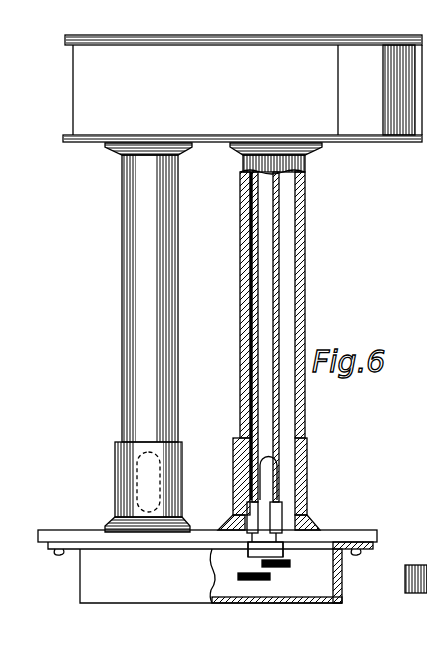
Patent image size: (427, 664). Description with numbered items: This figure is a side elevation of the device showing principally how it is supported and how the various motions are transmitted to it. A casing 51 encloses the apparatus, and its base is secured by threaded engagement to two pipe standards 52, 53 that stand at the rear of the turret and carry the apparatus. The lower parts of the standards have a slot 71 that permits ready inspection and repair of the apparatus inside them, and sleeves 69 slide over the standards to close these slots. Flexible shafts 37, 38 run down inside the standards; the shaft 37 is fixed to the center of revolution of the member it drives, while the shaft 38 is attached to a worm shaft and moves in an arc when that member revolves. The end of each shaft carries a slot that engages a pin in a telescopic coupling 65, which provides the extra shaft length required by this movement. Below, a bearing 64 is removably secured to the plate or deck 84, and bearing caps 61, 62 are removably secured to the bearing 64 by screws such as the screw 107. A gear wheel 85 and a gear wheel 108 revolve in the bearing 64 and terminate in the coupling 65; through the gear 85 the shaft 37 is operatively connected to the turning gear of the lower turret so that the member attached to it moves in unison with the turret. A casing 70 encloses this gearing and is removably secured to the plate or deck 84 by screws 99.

The casing 51 is at (242, 88).
The pipe standard 52 is at (135, 339).
The pipe standard 53 is at (242, 255).
The flexible shaft 37 is at (278, 254).
The flexible shaft 38 is at (251, 338).
The sleeve 69 is at (173, 473).
The slot 71 is at (265, 473).
The bearing cap 61 is at (228, 535).
The coupling 65 is at (272, 518).
The plate 84 is at (373, 537).
The screw 99 is at (59, 555).
The casing 70 is at (211, 576).
The bearing 64 is at (255, 550).
The gear wheel 108 is at (256, 582).
The bearing cap 62 is at (284, 549).
The gear wheel 85 is at (285, 570).
The screw 107 is at (426, 468).